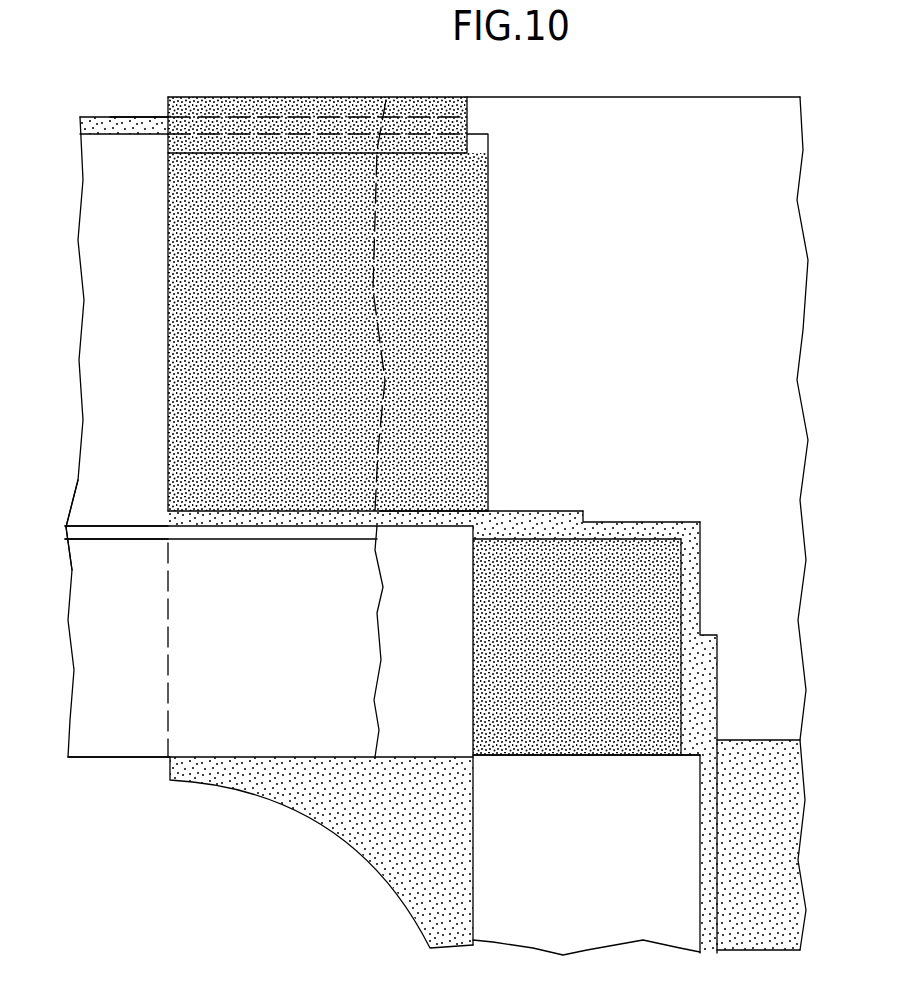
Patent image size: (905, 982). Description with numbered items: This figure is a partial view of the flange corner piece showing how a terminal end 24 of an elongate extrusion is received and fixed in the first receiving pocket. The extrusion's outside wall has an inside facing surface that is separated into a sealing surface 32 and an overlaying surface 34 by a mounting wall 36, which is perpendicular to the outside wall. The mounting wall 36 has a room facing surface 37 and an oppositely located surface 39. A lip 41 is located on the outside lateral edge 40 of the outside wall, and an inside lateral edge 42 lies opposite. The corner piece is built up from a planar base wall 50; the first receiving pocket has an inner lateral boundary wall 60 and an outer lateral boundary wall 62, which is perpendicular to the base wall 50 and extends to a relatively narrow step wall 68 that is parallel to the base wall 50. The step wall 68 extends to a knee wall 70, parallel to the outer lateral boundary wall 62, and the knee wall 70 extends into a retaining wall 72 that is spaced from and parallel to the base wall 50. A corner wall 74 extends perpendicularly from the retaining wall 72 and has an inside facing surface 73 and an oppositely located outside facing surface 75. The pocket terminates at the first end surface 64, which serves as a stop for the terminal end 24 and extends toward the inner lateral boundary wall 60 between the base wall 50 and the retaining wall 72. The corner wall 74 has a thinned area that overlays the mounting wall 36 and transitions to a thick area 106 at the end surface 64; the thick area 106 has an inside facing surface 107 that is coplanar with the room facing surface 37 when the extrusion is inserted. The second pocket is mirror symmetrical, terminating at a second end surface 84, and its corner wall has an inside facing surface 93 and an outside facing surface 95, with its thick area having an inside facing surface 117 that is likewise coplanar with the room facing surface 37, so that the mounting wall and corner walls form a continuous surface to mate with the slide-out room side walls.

The terminal end 24 is at (383, 587).
The sealing surface 32 is at (145, 405).
The overlaying surface 34 is at (130, 693).
The mounting wall 36 is at (65, 527).
The room facing surface 37 is at (107, 540).
The oppositely located surface 39 is at (118, 525).
The outside lateral edge 40 is at (133, 117).
The lip 41 is at (110, 127).
The inside lateral edge 42 is at (128, 760).
The planar base wall 50 is at (770, 301).
The inner lateral boundary wall 60 is at (420, 752).
The outer lateral boundary wall 62 is at (242, 102).
The first end surface 64 is at (470, 603).
The step wall 68 is at (302, 127).
The knee wall 70 is at (373, 140).
The retaining wall 72 is at (330, 309).
The inside facing surface 73 is at (398, 522).
The corner wall 74 is at (270, 516).
The outside facing surface 75 is at (398, 510).
The second end surface 84 is at (647, 757).
The inside facing surface 93 is at (698, 838).
The outside facing surface 95 is at (717, 837).
The thick area 106 is at (527, 525).
The inside facing surface 107 is at (545, 540).
The inside facing surface 117 is at (680, 670).